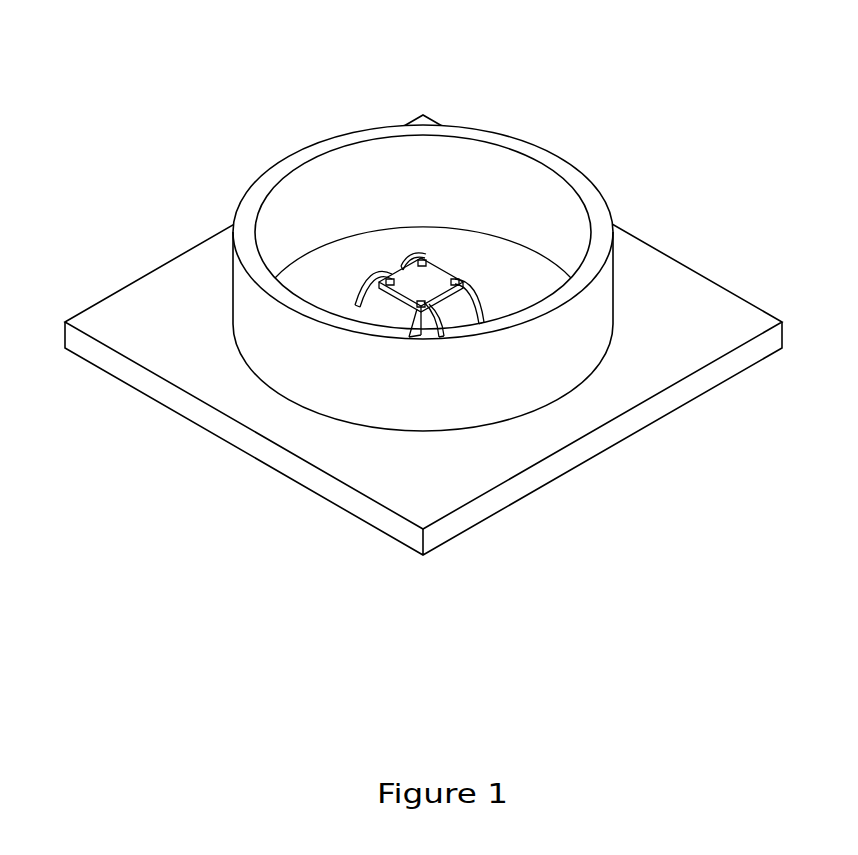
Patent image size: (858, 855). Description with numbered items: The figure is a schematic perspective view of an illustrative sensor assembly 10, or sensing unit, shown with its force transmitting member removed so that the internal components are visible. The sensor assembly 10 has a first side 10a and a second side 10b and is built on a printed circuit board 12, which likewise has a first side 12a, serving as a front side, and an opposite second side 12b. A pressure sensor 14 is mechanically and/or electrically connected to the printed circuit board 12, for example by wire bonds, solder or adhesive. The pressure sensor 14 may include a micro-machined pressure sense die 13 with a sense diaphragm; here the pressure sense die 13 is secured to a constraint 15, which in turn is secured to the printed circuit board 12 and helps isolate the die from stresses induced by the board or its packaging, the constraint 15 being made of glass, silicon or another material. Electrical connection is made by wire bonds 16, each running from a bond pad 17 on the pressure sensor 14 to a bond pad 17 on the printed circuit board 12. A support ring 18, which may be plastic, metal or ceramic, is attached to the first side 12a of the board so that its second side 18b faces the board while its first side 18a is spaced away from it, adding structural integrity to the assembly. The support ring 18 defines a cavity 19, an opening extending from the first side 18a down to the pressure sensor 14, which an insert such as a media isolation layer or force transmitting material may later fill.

The sensor assembly 10 is at (449, 306).
The first side of sensor assembly 10a is at (181, 152).
The second side of sensor assembly 10b is at (205, 483).
The printed circuit board 12 is at (449, 335).
The first side of PCB 12a is at (740, 308).
The second side of PCB 12b is at (682, 420).
The pressure sense die 13 is at (383, 320).
The pressure sensor 14 is at (442, 268).
The constraint 15 is at (390, 298).
The wire bonds 16 is at (413, 257).
The bond pad 17 is at (456, 282).
The support ring 18 is at (423, 318).
The first side of support ring 18a is at (492, 137).
The second side of support ring 18b is at (423, 435).
The cavity 19 is at (326, 172).